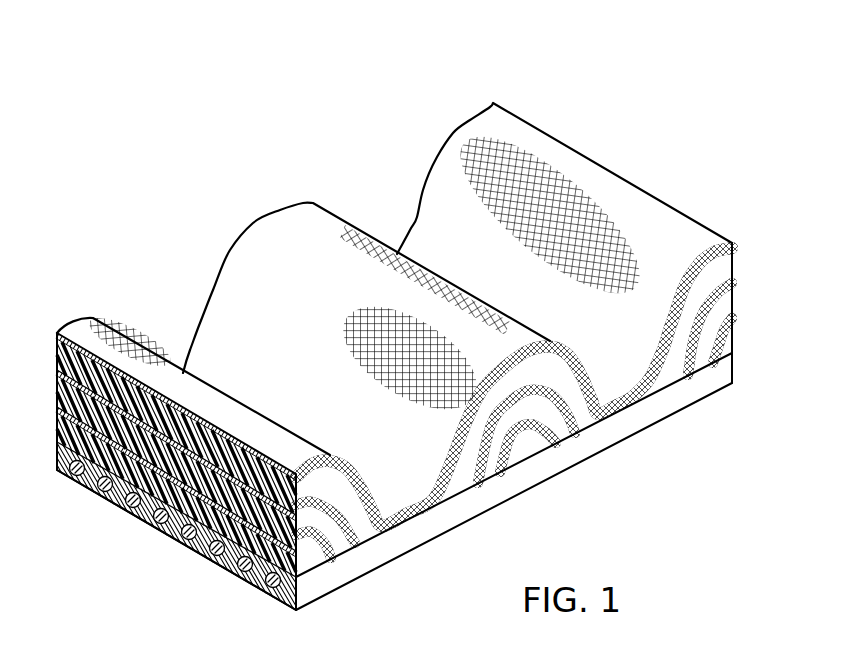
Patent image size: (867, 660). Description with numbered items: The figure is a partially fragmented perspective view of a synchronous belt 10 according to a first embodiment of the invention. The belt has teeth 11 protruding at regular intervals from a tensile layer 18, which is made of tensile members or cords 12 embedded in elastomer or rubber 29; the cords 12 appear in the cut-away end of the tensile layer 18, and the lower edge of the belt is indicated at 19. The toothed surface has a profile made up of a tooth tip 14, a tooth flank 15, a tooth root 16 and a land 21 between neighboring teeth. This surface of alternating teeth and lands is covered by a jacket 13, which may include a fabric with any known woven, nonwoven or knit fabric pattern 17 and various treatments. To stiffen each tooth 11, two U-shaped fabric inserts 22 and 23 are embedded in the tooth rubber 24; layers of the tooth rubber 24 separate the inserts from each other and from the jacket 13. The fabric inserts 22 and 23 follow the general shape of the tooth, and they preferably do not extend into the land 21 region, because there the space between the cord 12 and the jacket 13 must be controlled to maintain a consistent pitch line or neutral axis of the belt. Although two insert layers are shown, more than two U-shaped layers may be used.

The synchronous belt 10 is at (547, 66).
The tooth 11 is at (285, 222).
The tensile members or cords 12 is at (118, 505).
The jacket 13 is at (672, 378).
The tooth tip 14 is at (327, 232).
The tooth flank 15 is at (232, 305).
The tooth root 16 is at (623, 393).
The fabric pattern 17 is at (470, 160).
The tensile layer 18 is at (317, 588).
The bottom edge 19 is at (255, 610).
The land 21 is at (394, 492).
The fabric insert 22 is at (507, 452).
The fabric insert 23 is at (585, 410).
The tooth rubber 24 is at (305, 562).
The elastomer or rubber 29 is at (160, 530).